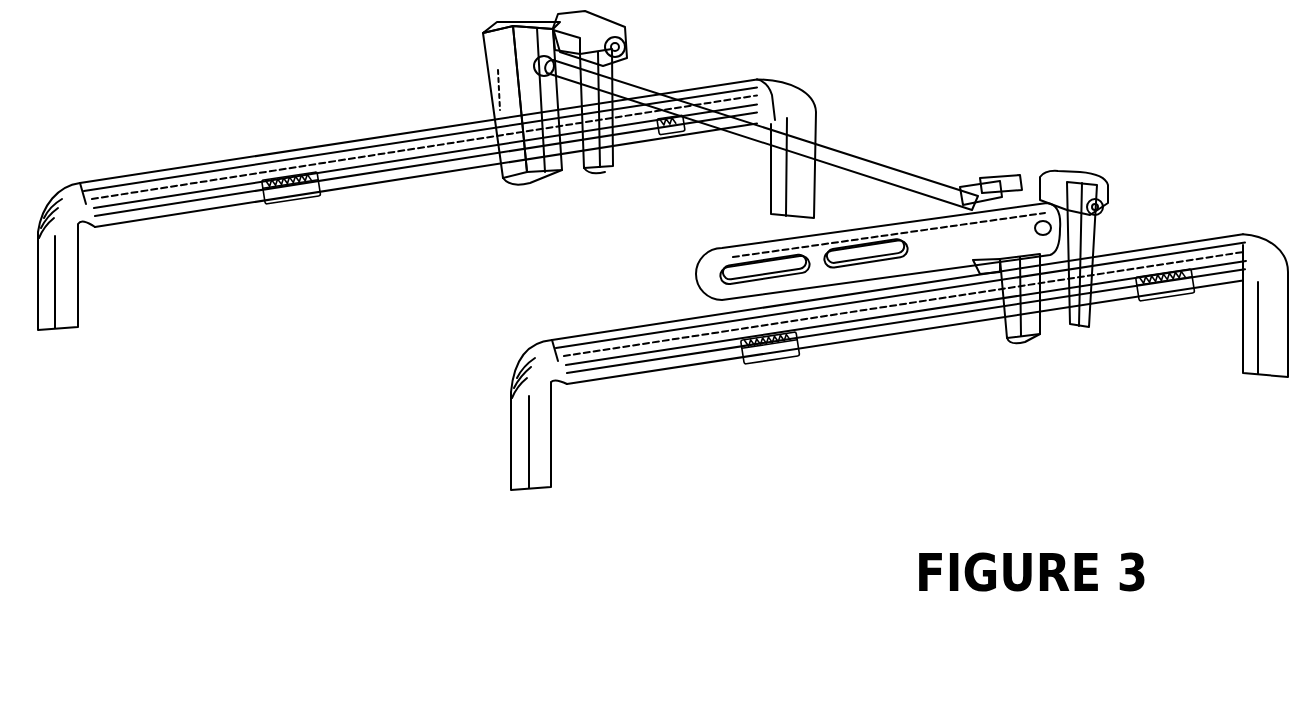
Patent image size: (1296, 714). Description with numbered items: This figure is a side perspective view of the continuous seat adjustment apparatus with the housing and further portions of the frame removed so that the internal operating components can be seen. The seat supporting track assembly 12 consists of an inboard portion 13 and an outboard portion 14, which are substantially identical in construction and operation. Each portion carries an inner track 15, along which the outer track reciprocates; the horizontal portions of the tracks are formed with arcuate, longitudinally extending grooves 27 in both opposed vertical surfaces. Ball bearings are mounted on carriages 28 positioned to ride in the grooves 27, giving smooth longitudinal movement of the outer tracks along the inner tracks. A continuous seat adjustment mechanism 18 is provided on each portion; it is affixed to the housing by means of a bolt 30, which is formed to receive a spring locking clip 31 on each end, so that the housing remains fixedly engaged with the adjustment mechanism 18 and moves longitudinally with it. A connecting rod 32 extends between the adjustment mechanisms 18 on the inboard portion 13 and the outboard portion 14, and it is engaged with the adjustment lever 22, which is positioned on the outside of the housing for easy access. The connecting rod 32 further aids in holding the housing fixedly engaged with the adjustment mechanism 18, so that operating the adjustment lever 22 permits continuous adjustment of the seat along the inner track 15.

The seat supporting track assembly 12 is at (663, 285).
The inboard portion 13 is at (427, 230).
The outboard portion 14 is at (839, 362).
The inner track 15 is at (606, 383).
The continuous seat adjustment mechanism 18 is at (1073, 244).
The adjustment lever 22 is at (700, 275).
The grooves 27 is at (142, 203).
The carriages 28 is at (290, 201).
The bolt 30 is at (1104, 208).
The spring locking clip 31 is at (1047, 293).
The connecting rod 32 is at (870, 160).